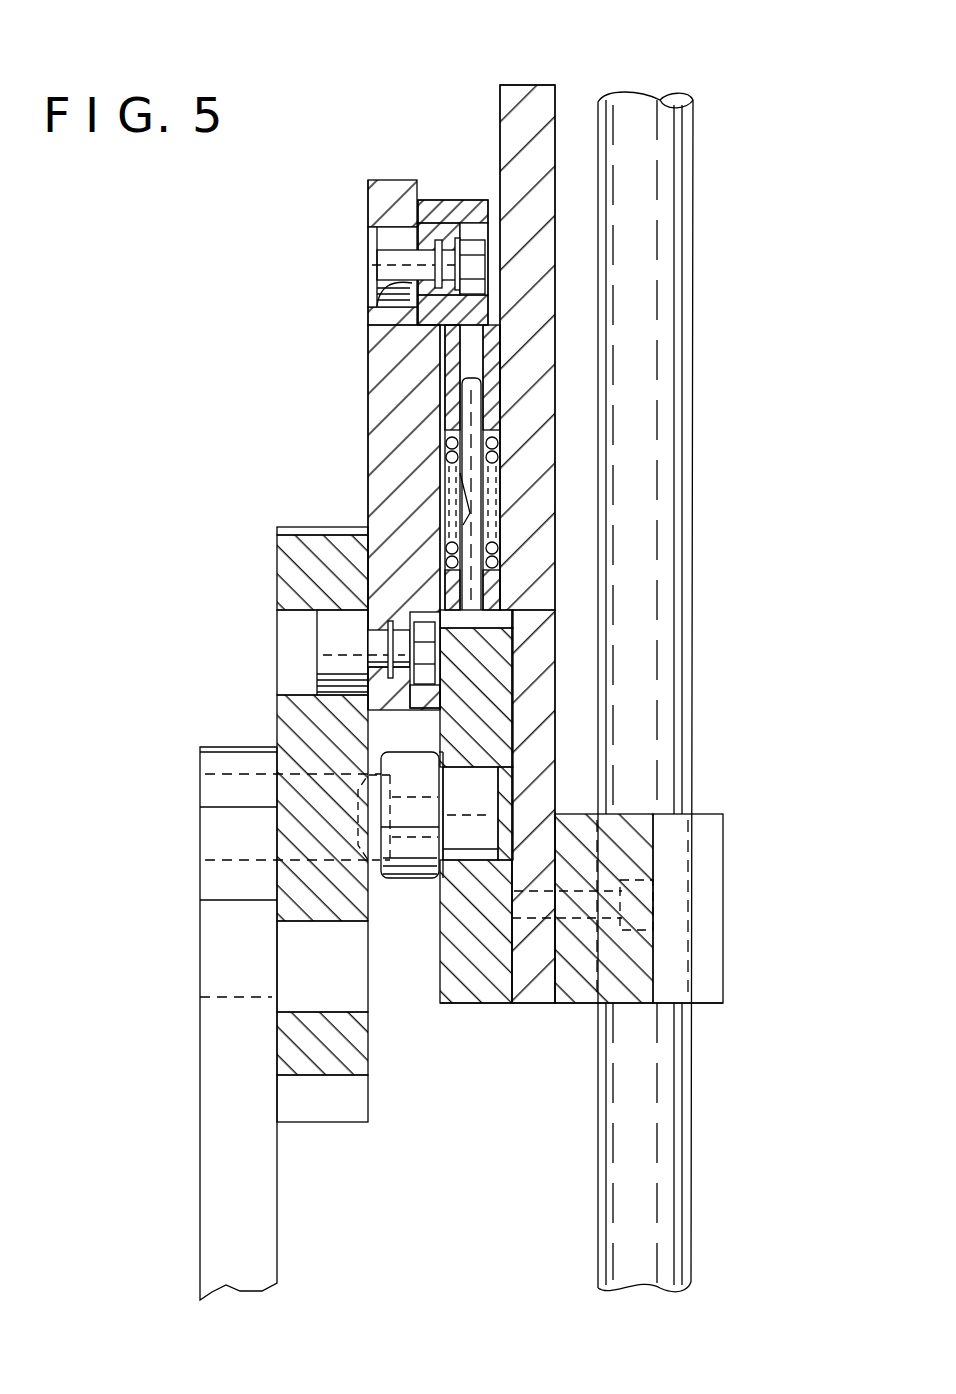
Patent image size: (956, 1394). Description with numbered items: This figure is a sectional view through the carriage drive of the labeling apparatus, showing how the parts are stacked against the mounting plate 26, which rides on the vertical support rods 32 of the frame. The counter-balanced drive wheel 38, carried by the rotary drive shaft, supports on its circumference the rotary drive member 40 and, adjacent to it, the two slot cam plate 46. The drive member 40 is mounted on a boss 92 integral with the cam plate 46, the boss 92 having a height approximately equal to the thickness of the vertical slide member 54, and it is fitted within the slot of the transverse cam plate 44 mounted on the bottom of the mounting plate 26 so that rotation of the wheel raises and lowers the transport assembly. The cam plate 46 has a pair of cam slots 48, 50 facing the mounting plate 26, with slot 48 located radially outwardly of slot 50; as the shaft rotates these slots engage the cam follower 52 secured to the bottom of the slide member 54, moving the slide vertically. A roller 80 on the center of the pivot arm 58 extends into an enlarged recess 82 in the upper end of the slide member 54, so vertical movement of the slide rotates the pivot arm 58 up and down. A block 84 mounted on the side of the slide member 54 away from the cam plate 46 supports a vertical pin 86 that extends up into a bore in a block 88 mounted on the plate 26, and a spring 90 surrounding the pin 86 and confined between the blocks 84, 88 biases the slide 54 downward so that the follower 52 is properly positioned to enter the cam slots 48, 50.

The mounting plate 26 is at (541, 97).
The support rods 32 is at (693, 1101).
The drive wheel 38 is at (208, 1127).
The rotary drive member 40 is at (483, 795).
The transverse cam plate 44 is at (463, 1006).
The two slot cam plate 46 is at (288, 542).
The cam slot 48 is at (294, 614).
The cam slot 50 is at (297, 1012).
The cam follower 52 is at (322, 666).
The vertical slide member 54 is at (372, 398).
The pivot arm 58 is at (437, 200).
The roller 80 is at (385, 243).
The enlarged recess 82 is at (412, 283).
The block 84 is at (495, 590).
The vertical pin 86 is at (468, 472).
The block 88 is at (495, 362).
The spring 90 is at (498, 540).
The boss 92 is at (409, 856).